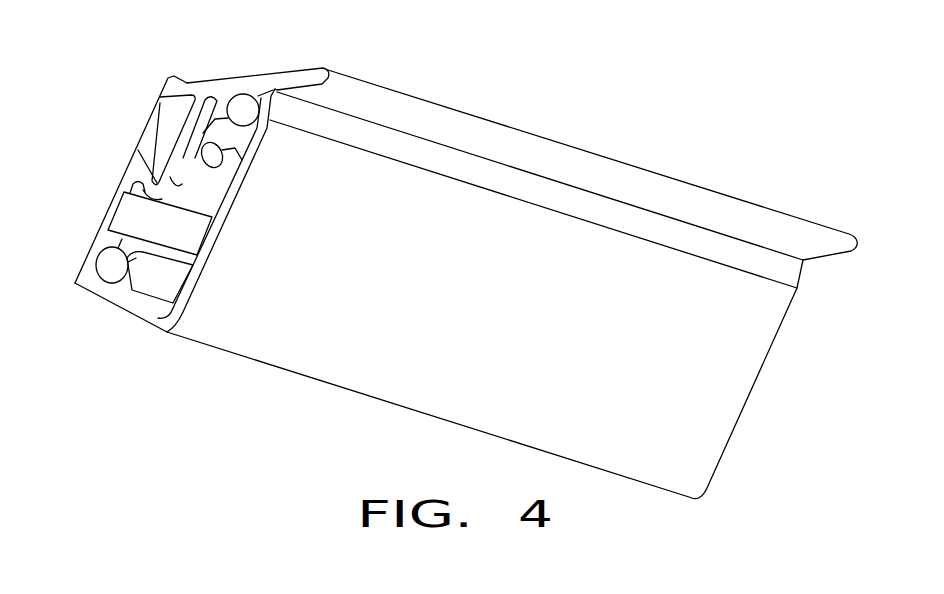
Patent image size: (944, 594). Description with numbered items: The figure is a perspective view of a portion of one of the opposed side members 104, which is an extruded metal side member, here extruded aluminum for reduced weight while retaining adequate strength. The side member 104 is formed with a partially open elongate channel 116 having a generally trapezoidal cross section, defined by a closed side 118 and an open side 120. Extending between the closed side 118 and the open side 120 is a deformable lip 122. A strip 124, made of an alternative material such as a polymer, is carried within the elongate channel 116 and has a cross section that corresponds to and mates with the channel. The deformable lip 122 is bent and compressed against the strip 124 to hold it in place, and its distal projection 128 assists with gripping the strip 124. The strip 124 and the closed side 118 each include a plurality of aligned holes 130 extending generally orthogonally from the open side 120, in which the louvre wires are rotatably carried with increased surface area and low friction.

The side member 104 is at (716, 407).
The elongate channel 116 is at (203, 175).
The closed side 118 is at (137, 187).
The open side 120 is at (137, 130).
The deformable lip 122 is at (185, 76).
The strip 124 is at (147, 122).
The distal projection 128 is at (160, 130).
The aligned holes 130 is at (243, 161).